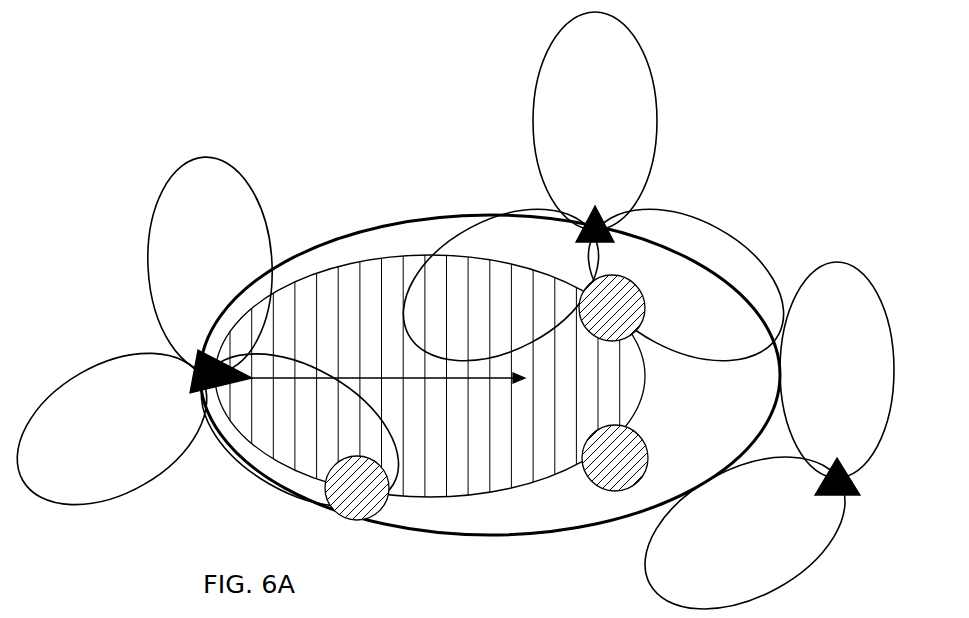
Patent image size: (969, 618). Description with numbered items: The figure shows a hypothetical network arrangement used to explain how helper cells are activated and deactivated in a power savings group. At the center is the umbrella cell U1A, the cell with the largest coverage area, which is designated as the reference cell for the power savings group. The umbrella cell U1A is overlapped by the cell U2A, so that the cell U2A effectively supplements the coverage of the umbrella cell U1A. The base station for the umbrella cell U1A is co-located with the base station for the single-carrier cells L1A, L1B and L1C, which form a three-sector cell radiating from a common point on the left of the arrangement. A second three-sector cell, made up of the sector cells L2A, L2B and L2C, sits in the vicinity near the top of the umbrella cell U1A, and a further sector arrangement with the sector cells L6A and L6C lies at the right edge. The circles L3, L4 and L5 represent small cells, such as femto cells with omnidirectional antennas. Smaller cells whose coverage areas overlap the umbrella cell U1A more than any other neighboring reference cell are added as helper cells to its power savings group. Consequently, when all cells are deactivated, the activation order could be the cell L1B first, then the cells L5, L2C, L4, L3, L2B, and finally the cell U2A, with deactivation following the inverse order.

The umbrella cell U1A is at (505, 533).
The overlapping cell U2A is at (432, 499).
The single-carrier cell L1A is at (209, 265).
The single-carrier cell L1B is at (299, 429).
The single-carrier cell L1C is at (116, 429).
The sector cell L2A is at (595, 121).
The sector cell L2B is at (686, 284).
The sector cell L2C is at (501, 284).
The small cell L3 is at (615, 458).
The small cell L4 is at (612, 308).
The small cell L5 is at (357, 488).
The sector cell L6A is at (837, 370).
The sector cell L6C is at (745, 522).